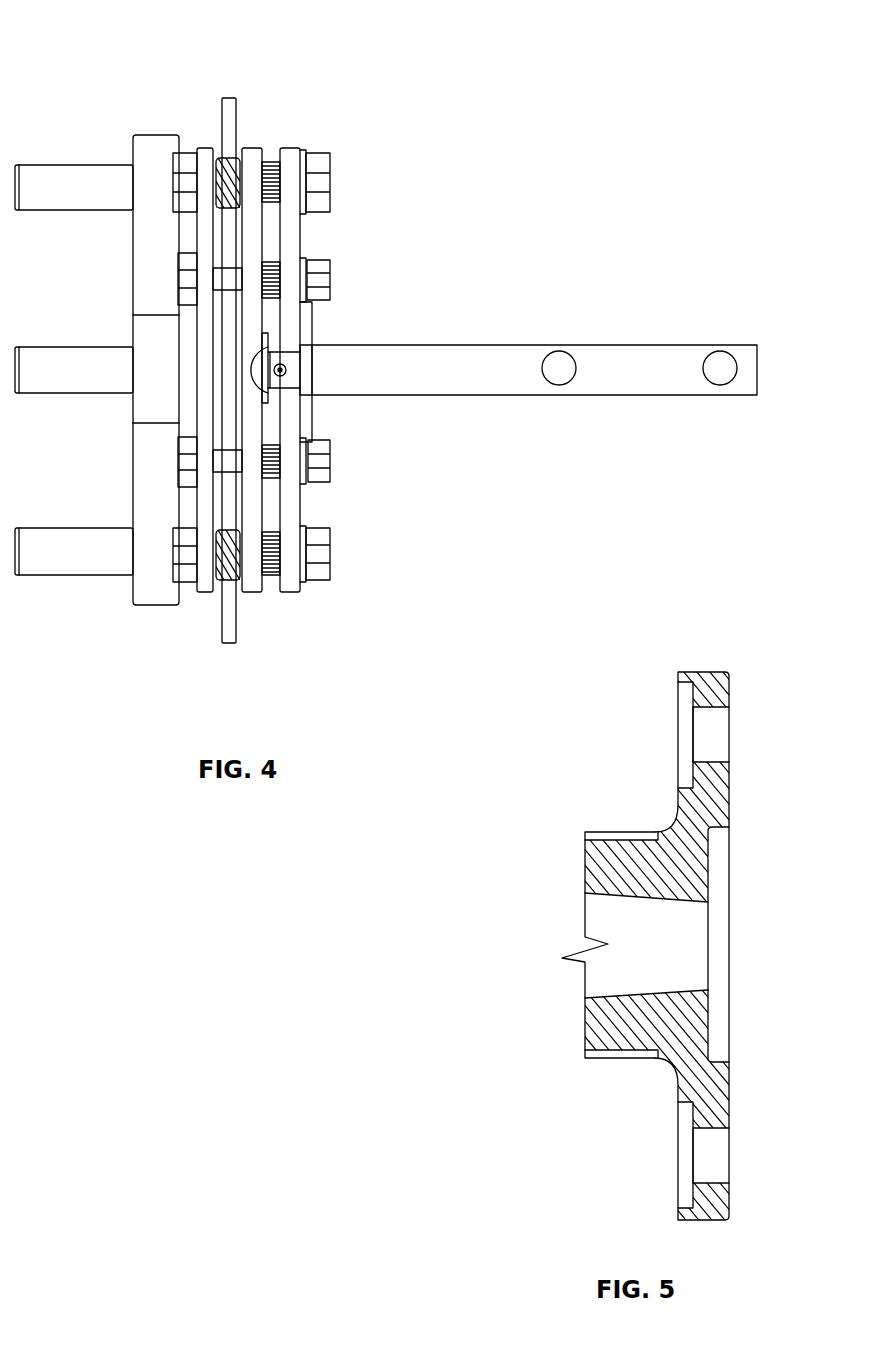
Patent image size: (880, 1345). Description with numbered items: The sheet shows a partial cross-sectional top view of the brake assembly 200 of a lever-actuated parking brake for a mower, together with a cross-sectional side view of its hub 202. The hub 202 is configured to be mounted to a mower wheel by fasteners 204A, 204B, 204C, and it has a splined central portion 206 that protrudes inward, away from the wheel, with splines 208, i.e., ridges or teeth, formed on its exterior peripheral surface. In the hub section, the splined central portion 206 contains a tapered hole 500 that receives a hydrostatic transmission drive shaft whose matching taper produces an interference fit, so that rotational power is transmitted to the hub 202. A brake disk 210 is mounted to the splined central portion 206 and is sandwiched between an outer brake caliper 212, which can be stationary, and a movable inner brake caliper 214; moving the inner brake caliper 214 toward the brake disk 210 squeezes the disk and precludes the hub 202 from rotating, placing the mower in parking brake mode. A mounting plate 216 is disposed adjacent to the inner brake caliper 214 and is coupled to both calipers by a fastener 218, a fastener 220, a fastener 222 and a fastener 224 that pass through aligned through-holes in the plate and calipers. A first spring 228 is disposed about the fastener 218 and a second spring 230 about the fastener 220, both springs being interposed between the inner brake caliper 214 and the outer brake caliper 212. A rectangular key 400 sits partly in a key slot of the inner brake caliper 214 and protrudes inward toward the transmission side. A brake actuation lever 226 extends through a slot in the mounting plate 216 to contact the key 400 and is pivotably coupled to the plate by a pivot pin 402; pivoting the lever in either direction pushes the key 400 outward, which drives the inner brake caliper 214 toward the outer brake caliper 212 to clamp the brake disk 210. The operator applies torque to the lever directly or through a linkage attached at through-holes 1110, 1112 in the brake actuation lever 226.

In FIG. 4, the brake assembly 200 is at (110, 88).
In FIG. 4, the hub 202 is at (158, 607).
In FIG. 5, the hub 202 is at (634, 654).
In FIG. 4, the fastener 204A is at (93, 347).
In FIG. 4, the fastener 204B is at (68, 527).
In FIG. 4, the fastener 204C is at (80, 165).
In FIG. 5, the splined central portion 206 is at (620, 1036).
In FIG. 5, the splines 208 is at (626, 828).
In FIG. 4, the brake disk 210 is at (230, 647).
In FIG. 4, the outer brake caliper 212 is at (203, 146).
In FIG. 4, the inner brake caliper 214 is at (255, 146).
In FIG. 4, the mounting plate 216 is at (295, 146).
In FIG. 4, the fastener 218 is at (330, 578).
In FIG. 4, the fastener 220 is at (330, 165).
In FIG. 4, the fastener 222 is at (332, 448).
In FIG. 4, the fastener 224 is at (330, 295).
In FIG. 4, the brake actuation lever 226 is at (634, 340).
In FIG. 4, the first spring 228 is at (228, 594).
In FIG. 4, the second spring 230 is at (228, 155).
In FIG. 4, the key 400 is at (272, 328).
In FIG. 4, the pivot pin 402 is at (287, 370).
In FIG. 5, the tapered hole 500 is at (571, 929).
In FIG. 4, the through-hole 1110 is at (555, 374).
In FIG. 4, the through-hole 1112 is at (722, 380).